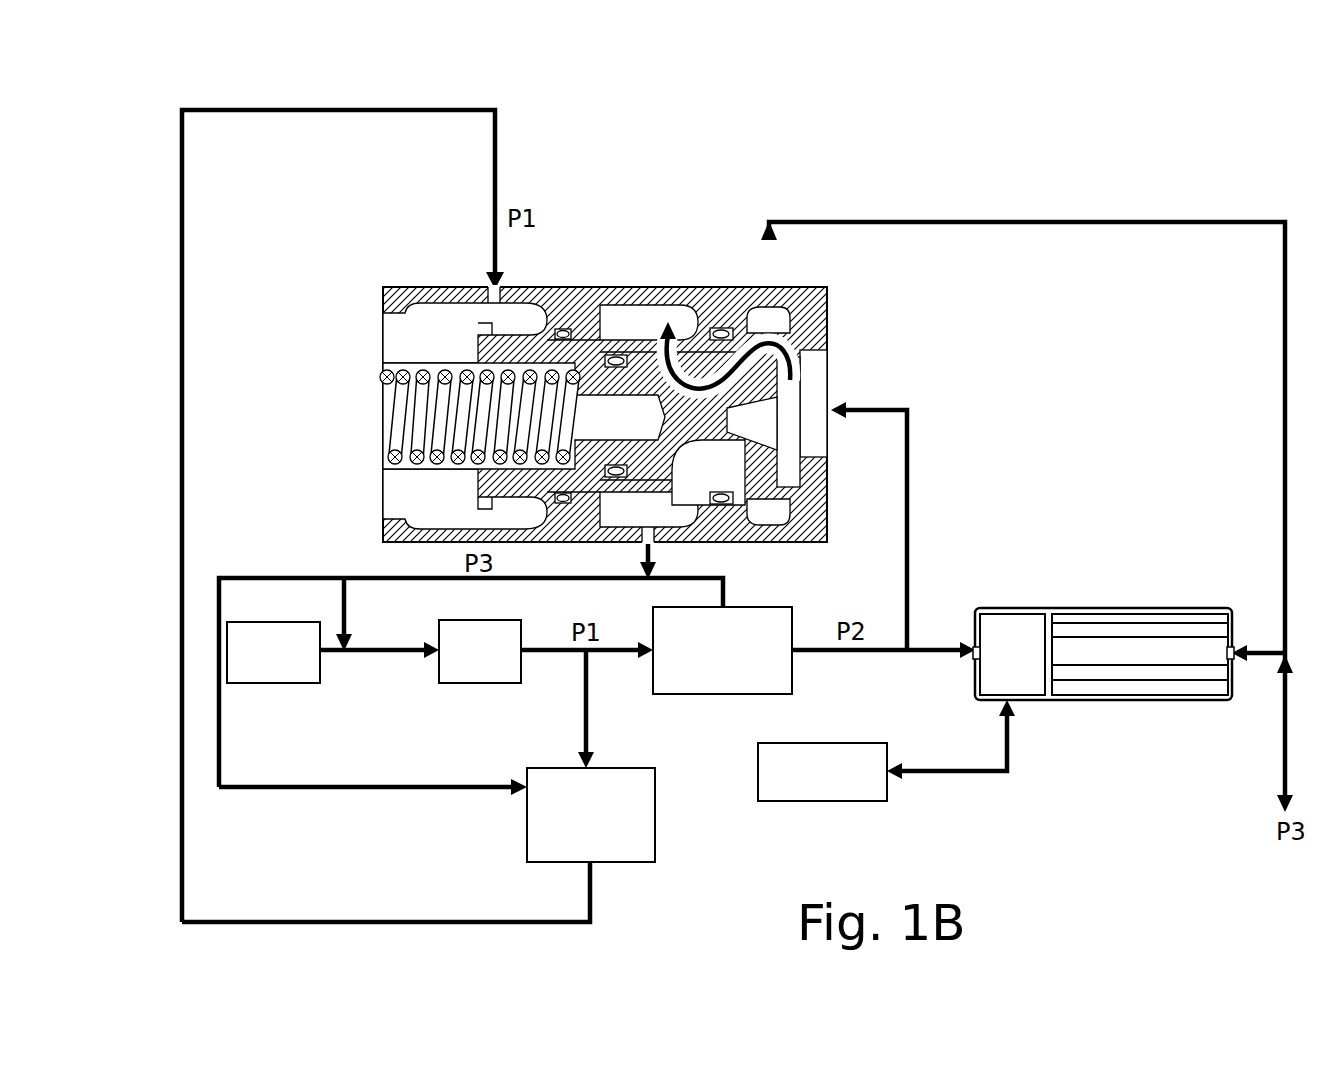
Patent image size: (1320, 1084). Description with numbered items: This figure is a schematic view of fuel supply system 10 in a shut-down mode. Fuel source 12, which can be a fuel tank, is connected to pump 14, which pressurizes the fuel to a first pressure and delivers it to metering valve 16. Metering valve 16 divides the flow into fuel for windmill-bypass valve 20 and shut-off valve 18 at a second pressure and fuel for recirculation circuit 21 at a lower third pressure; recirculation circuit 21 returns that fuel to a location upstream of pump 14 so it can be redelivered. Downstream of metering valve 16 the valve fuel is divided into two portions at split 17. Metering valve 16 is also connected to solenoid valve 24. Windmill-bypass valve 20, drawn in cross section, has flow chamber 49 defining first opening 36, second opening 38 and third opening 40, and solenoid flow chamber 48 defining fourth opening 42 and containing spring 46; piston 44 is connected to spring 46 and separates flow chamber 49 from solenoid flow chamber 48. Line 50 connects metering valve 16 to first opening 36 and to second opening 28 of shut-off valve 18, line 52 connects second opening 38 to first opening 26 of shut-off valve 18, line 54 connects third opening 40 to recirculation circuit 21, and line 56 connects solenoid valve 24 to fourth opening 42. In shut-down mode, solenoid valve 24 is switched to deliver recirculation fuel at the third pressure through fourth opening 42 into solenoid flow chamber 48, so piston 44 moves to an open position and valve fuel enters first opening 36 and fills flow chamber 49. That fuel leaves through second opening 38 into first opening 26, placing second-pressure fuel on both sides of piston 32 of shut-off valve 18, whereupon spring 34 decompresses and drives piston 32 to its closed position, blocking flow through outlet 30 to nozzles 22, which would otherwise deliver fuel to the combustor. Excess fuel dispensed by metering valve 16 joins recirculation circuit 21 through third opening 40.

The fuel system 10 is at (160, 297).
The fuel source 12 is at (288, 683).
The pump 14 is at (490, 683).
The metering valve 16 is at (700, 694).
The split 17 is at (900, 655).
The shut-off valve 18 is at (1103, 633).
The windmill-bypass valve 20 is at (622, 379).
The recirculation circuit 21 is at (593, 578).
The nozzles 22 is at (816, 743).
The solenoid valve 24 is at (527, 824).
The first opening 26 is at (1237, 660).
The second opening 28 is at (968, 645).
The outlet 30 is at (1032, 702).
The piston 32 is at (1018, 633).
The spring 34 is at (1165, 682).
The first opening 36 is at (820, 435).
The second opening 38 is at (790, 318).
The third opening 40 is at (682, 508).
The fourth opening 42 is at (488, 290).
The piston 44 is at (625, 375).
The spring 46 is at (383, 377).
The solenoid flow chamber 48 is at (447, 520).
The flow chamber 49 is at (720, 462).
The line 50 is at (909, 465).
The line 52 is at (1127, 220).
The line 54 is at (652, 550).
The line 56 is at (345, 110).